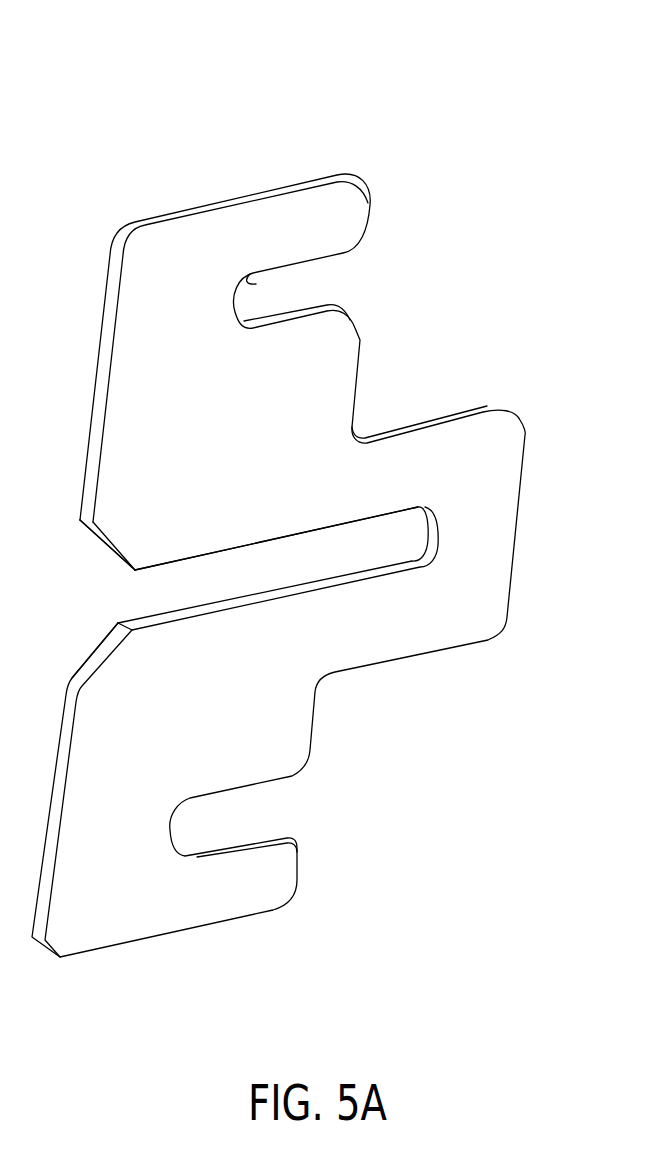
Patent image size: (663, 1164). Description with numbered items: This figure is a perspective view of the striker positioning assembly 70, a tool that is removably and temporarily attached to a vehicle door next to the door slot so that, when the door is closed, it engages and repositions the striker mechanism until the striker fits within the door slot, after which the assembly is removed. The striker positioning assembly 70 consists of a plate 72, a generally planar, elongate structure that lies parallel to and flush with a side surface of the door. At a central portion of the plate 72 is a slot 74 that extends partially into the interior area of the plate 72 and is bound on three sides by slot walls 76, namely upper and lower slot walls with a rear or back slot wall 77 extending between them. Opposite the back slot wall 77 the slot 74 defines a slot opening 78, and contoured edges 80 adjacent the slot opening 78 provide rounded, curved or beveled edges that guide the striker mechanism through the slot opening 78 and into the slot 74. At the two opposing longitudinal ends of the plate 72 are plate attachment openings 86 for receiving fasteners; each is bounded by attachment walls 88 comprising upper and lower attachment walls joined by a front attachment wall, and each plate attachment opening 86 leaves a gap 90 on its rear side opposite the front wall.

The striker positioning assembly 70 is at (80, 68).
The plate 72 is at (127, 407).
The slot 74 is at (330, 552).
The slot walls 76 is at (395, 565).
The back slot wall 77 is at (432, 550).
The slot opening 78 is at (73, 596).
The contoured edges 80 is at (105, 547).
The plate attachment openings 86 is at (258, 284).
The attachment walls 88 is at (230, 303).
The gap 90 is at (383, 288).